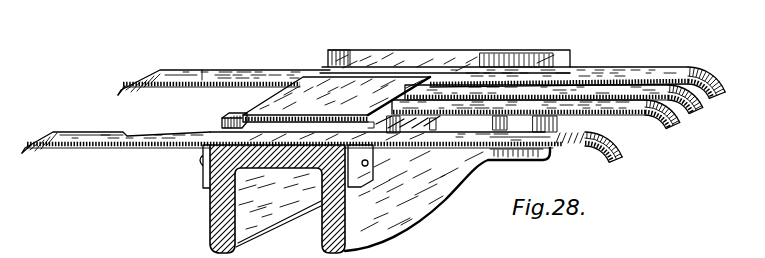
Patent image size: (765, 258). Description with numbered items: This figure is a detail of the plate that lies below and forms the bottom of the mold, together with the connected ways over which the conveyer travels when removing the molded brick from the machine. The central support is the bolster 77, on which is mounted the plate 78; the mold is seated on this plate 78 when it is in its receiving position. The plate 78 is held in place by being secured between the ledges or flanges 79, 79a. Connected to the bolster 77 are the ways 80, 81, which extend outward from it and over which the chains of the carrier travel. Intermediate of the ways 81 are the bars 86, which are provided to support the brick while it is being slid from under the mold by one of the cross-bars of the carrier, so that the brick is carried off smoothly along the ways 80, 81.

The bolster 77 is at (375, 199).
The plate 78 is at (295, 91).
The ledge or flange 79 is at (428, 77).
The ledge or flange 79a is at (226, 121).
The way 80 is at (164, 92).
The way 81 is at (655, 124).
The bar 86 is at (545, 112).